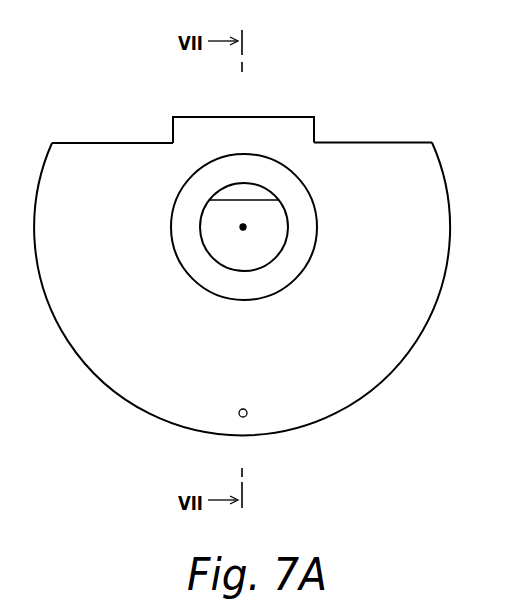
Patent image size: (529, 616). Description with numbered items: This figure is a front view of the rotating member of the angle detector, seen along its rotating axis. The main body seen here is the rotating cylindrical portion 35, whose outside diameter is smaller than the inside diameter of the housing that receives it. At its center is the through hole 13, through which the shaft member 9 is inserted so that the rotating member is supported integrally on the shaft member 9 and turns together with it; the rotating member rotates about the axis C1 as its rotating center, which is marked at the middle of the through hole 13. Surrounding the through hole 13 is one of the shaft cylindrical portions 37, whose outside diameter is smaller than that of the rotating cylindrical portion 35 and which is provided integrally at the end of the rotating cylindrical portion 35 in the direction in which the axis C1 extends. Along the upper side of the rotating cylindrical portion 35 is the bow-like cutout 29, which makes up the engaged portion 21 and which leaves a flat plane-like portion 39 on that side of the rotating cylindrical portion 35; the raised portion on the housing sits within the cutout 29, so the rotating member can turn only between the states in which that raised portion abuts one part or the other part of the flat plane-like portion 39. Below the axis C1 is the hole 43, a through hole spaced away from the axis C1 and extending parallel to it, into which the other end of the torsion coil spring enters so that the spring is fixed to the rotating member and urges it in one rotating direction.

The engaged portion 21 is at (250, 280).
The cutout 29 is at (250, 280).
The flat plane-like portion 39 is at (107, 143).
The rotating cylindrical portion 35 is at (310, 425).
The shaft cylindrical portion 37 is at (316, 215).
The through hole 13 is at (173, 310).
The shaft member 9 is at (230, 252).
The axis C1 is at (247, 226).
The hole 43 is at (243, 408).